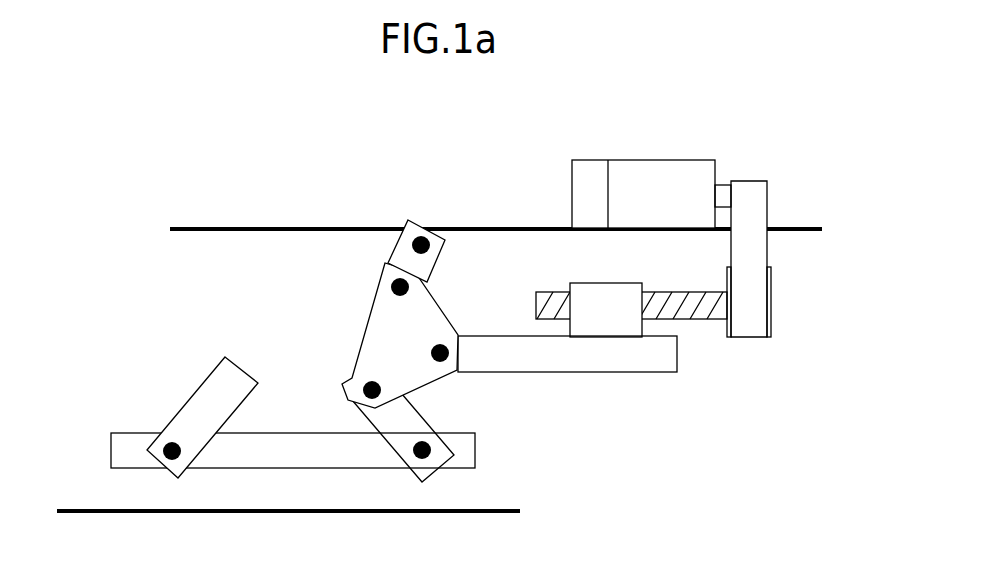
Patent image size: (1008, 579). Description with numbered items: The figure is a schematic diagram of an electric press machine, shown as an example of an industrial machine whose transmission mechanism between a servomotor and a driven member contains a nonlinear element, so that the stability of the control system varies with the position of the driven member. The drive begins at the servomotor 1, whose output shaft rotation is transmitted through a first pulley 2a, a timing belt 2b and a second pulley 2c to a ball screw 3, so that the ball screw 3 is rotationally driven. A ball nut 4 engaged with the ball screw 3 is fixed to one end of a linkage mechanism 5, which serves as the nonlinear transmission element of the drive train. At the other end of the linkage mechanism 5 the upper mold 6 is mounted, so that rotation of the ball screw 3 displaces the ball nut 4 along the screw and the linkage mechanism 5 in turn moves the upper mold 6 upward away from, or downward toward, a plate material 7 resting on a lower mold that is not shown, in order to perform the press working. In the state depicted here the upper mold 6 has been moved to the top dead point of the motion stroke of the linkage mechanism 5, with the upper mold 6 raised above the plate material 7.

The servomotor 1 is at (637, 162).
The pulley 2a is at (767, 193).
The timing belt 2b is at (762, 249).
The pulley 2c is at (771, 323).
The ball screw 3 is at (700, 313).
The ball nut 4 is at (603, 290).
The linkage mechanism 5 is at (500, 391).
The upper mold 6 is at (307, 433).
The plate material 7 is at (393, 513).